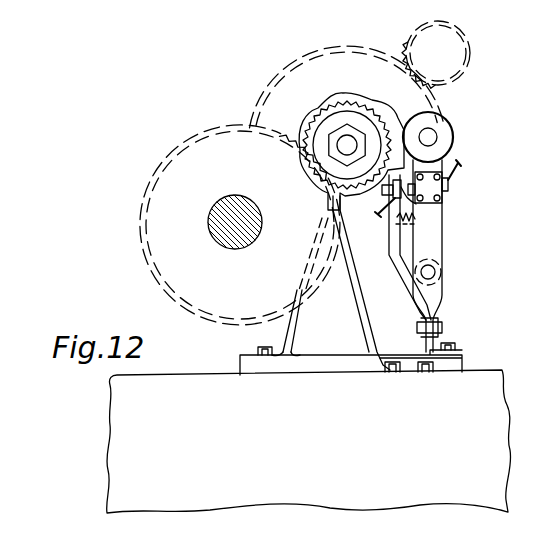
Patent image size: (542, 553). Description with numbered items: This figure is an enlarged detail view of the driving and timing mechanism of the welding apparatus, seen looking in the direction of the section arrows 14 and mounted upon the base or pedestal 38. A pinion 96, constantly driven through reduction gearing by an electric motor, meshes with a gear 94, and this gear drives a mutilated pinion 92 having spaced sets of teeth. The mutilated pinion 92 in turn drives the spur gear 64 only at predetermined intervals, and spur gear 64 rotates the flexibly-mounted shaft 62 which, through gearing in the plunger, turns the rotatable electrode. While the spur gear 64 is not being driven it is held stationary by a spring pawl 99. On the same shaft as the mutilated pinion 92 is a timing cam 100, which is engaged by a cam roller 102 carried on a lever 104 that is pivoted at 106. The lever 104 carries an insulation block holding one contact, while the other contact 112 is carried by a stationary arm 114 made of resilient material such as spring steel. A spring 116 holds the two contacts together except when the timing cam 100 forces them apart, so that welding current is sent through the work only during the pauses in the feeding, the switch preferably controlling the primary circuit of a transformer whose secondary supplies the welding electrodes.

The section line / viewing direction 14 is at (280, 161).
The base or pedestal 38 is at (316, 486).
The flexibly-mounted shaft 62 is at (233, 220).
The spur gear 64 is at (162, 236).
The mutilated pinion 92 is at (370, 125).
The gear 94 is at (287, 92).
The pinion 96 is at (447, 56).
The spring pawl 99 is at (368, 335).
The timing cam 100 is at (412, 153).
The cam roller 102 is at (442, 133).
The lever 104 is at (433, 243).
The pivot 106 is at (433, 275).
The contact 112 is at (417, 208).
The stationary arm 114 is at (393, 250).
The spring 116 is at (410, 220).